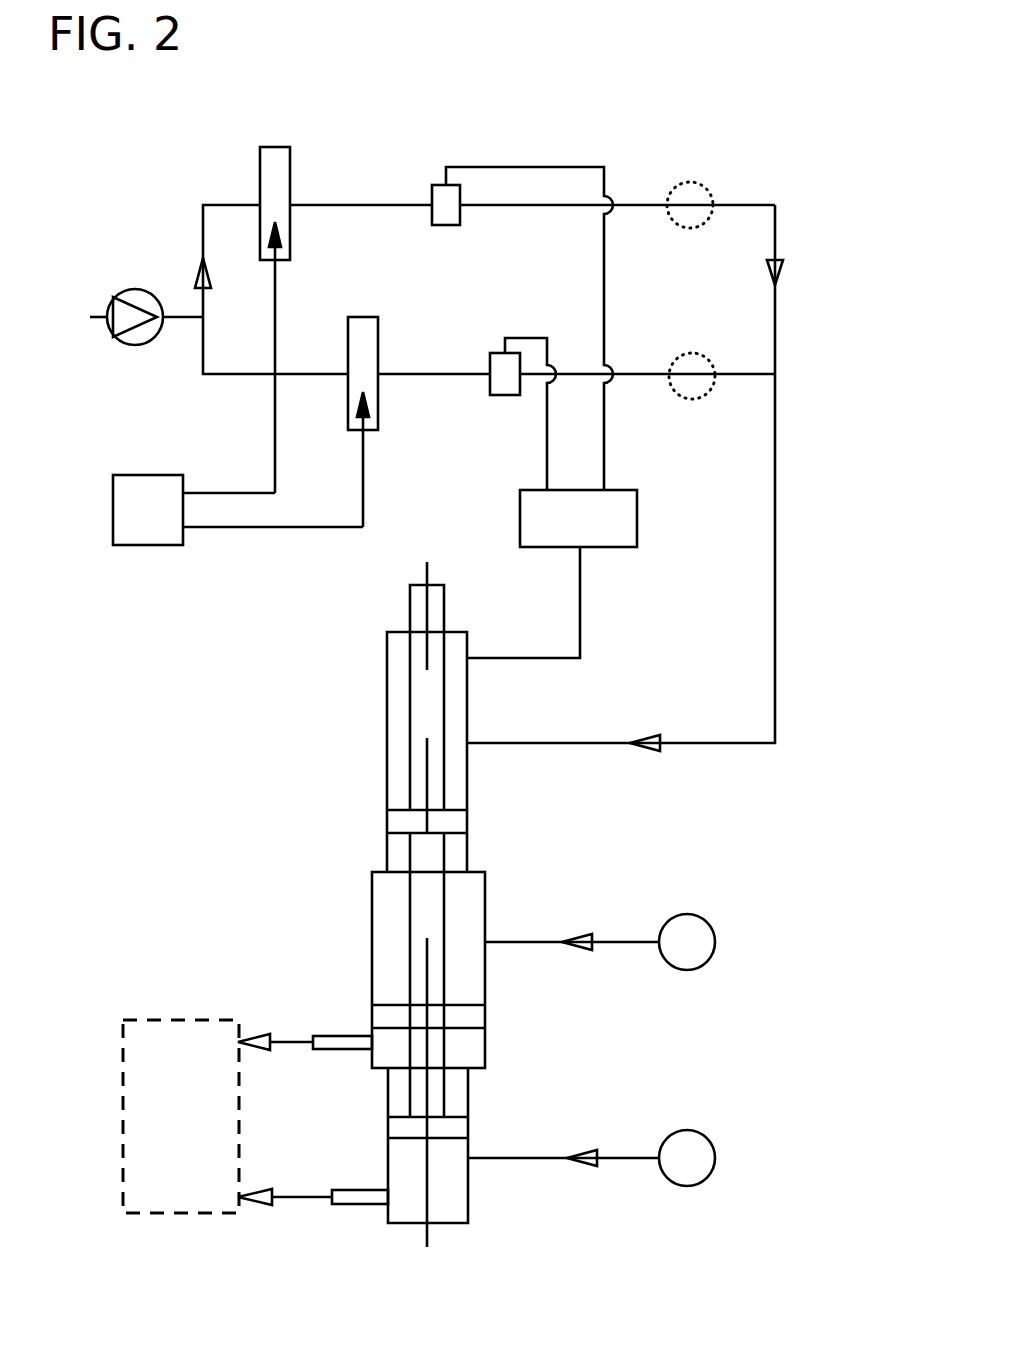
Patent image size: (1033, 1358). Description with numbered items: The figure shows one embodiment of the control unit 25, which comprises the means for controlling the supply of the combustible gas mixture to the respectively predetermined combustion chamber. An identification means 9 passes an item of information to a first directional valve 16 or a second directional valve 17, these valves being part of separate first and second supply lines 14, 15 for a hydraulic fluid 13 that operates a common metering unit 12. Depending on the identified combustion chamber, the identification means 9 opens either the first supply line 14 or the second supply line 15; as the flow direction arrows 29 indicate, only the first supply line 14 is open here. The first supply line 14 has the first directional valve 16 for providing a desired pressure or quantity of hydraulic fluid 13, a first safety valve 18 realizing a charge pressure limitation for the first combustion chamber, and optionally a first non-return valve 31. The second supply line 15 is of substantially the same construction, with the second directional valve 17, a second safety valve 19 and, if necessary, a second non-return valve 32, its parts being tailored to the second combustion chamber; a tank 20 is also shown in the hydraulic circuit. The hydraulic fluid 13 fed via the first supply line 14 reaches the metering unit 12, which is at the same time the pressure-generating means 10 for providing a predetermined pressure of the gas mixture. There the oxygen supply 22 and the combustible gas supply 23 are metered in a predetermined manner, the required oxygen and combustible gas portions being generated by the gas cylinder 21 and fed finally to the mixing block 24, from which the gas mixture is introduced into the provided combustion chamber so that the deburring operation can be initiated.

The identification means 9 is at (130, 492).
The pressure-generating means 10 is at (400, 595).
The metering unit 12 is at (610, 1052).
The hydraulic fluid 13 is at (140, 297).
The first supply line 14 is at (200, 212).
The second supply line 15 is at (200, 366).
The first directional valve 16 is at (281, 155).
The second directional valve 17 is at (364, 332).
The first safety valve 18 is at (445, 226).
The second safety valve 19 is at (500, 396).
The tank 20 is at (627, 522).
The gas cylinder 21 is at (372, 905).
The oxygen supply 22 is at (703, 942).
The combustible gas supply 23 is at (703, 1158).
The mixing block 24 is at (147, 1053).
The control unit 25 is at (185, 737).
The flow direction arrow 29 is at (781, 275).
The first non-return valve 31 is at (690, 190).
The second non-return valve 32 is at (687, 357).